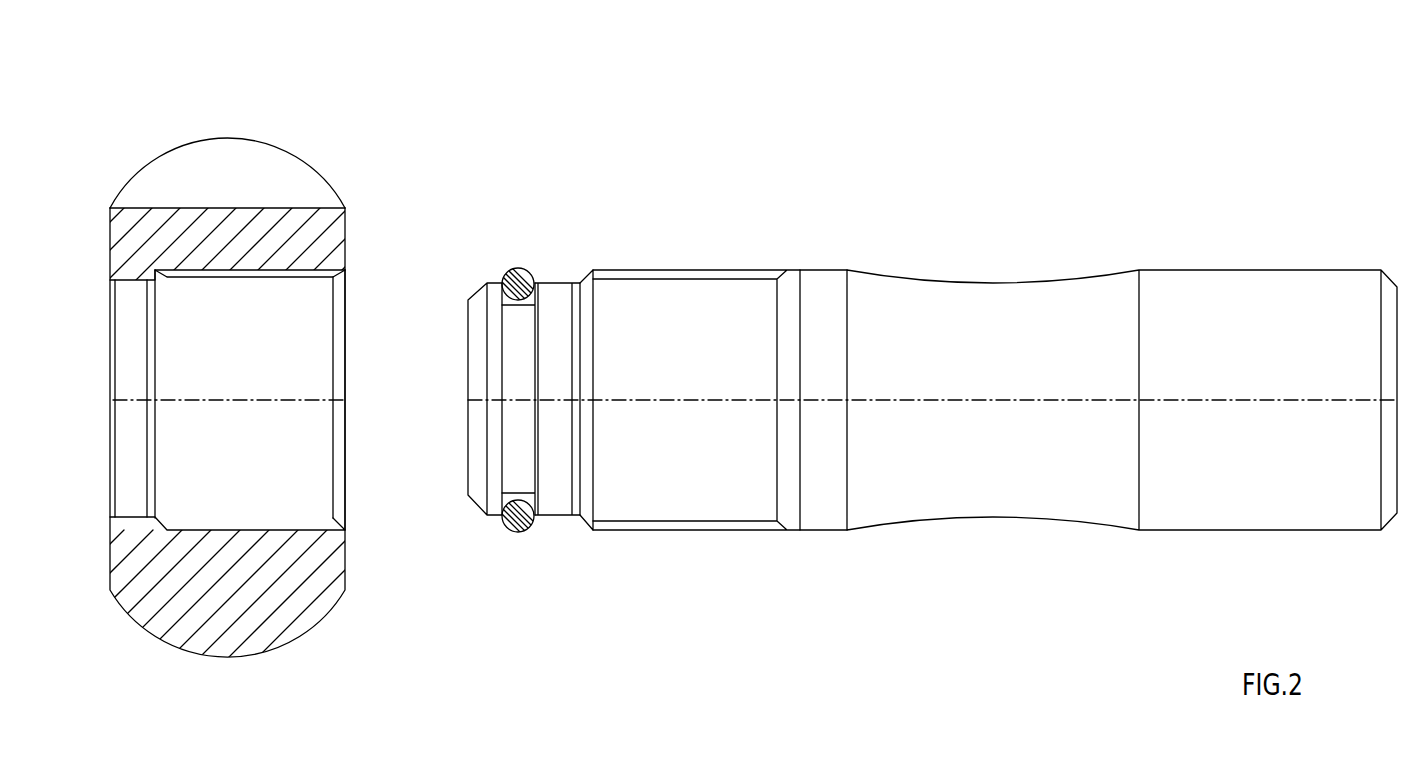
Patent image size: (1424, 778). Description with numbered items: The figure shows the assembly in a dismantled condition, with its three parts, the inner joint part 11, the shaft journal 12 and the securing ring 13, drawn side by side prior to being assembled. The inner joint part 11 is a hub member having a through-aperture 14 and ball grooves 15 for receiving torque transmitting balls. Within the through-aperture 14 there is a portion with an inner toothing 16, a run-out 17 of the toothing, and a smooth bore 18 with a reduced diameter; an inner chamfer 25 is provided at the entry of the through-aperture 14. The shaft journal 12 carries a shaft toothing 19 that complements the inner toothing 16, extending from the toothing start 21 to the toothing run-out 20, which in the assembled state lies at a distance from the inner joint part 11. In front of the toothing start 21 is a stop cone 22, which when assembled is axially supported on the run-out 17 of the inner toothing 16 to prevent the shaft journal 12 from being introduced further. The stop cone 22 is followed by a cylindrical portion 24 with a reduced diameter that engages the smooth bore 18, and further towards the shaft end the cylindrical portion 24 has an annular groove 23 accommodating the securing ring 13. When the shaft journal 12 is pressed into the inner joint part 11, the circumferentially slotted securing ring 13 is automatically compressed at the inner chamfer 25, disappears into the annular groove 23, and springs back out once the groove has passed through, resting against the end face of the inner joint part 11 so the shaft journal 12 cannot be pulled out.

The inner joint part 11 is at (303, 227).
The shaft journal 12 is at (825, 270).
The securing ring 13 is at (517, 268).
The through-aperture 14 is at (346, 420).
The ball grooves 15 is at (233, 163).
The inner toothing 16 is at (255, 275).
The run-out of the shaft toothing 17 is at (167, 275).
The smooth bore 18 is at (128, 282).
The shaft toothing 19 is at (690, 522).
The toothing run-out 20 is at (790, 530).
The toothing start 21 is at (595, 527).
The stop cone 22 is at (572, 518).
The annular groove 23 is at (515, 457).
The cylindrical portion 24 is at (546, 517).
The inner chamfer 25 is at (342, 288).